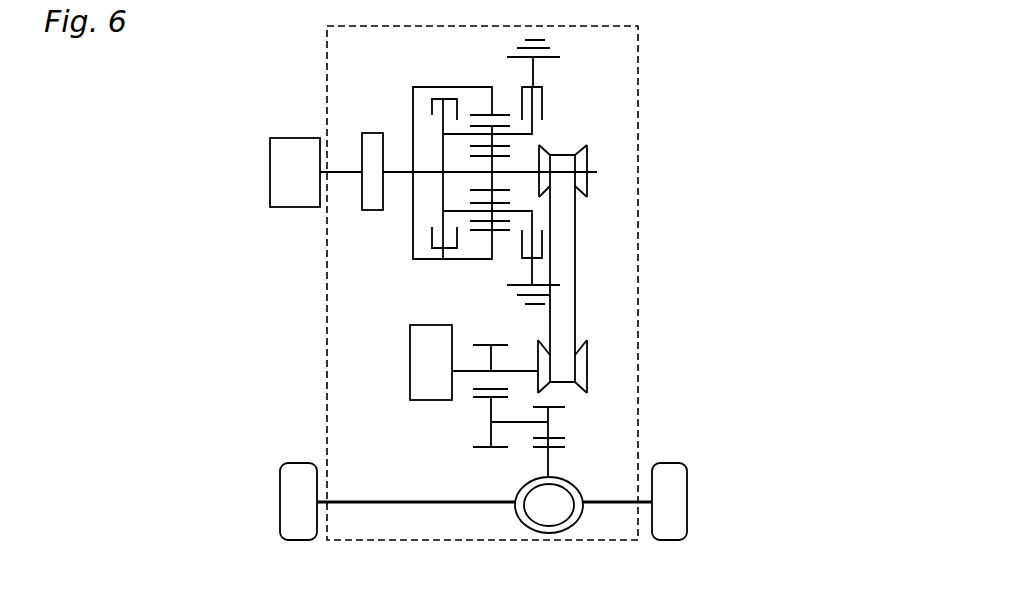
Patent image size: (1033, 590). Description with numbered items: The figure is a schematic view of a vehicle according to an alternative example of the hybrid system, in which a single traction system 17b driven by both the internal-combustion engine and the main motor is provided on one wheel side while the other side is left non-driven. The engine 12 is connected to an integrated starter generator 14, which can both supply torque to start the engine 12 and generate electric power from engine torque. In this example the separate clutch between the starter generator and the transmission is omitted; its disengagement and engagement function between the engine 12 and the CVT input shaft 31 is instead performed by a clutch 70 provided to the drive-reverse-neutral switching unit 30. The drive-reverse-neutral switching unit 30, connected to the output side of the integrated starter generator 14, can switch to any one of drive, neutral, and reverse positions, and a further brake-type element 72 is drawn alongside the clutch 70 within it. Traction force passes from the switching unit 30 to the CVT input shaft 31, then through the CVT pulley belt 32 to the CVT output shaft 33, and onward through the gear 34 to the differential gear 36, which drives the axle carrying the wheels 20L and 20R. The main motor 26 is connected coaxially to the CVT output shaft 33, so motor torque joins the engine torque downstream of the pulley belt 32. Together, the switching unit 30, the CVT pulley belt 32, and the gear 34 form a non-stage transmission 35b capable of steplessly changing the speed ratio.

The engine 12 is at (294, 138).
The integrated starter generator 14 is at (372, 133).
The traction system 17b is at (646, 80).
The left drive wheel (with axle 22L) 20L is at (300, 463).
The right drive wheel (with axle 22R) 20R is at (673, 463).
The main motor 26 is at (410, 370).
The drive-reverse-neutral switching unit 30 is at (402, 243).
The CVT input shaft 31 is at (520, 172).
The CVT pulley belt 32 is at (590, 172).
The CVT output shaft 33 is at (515, 369).
The gear 34 is at (450, 432).
The non-stage transmission 35b is at (585, 235).
The differential gear 36 is at (549, 534).
The clutch 70 is at (433, 115).
The brake 72 is at (542, 98).